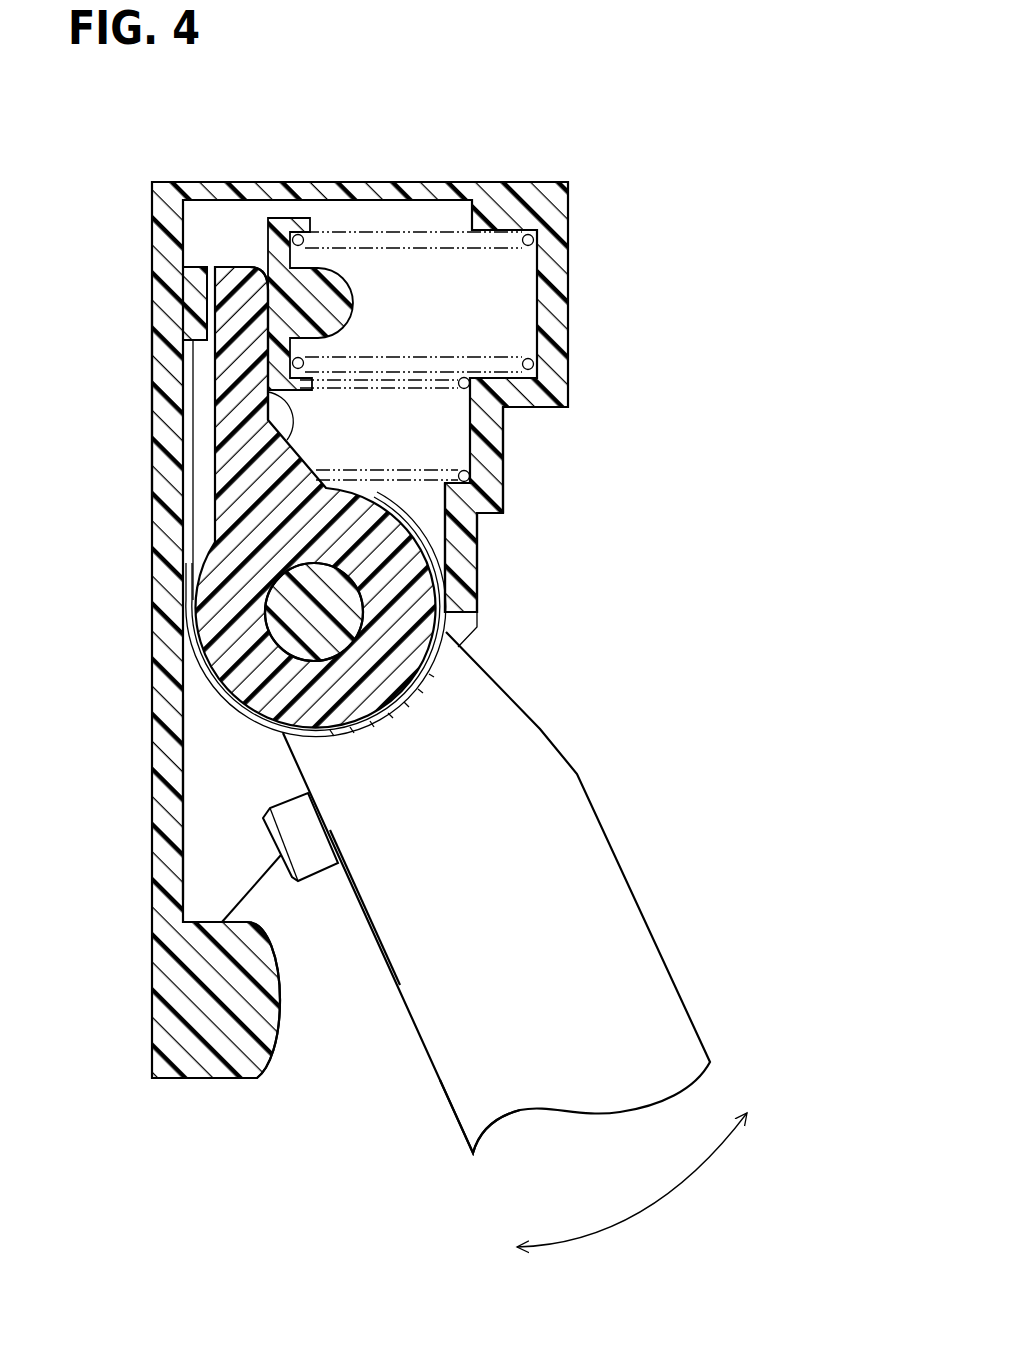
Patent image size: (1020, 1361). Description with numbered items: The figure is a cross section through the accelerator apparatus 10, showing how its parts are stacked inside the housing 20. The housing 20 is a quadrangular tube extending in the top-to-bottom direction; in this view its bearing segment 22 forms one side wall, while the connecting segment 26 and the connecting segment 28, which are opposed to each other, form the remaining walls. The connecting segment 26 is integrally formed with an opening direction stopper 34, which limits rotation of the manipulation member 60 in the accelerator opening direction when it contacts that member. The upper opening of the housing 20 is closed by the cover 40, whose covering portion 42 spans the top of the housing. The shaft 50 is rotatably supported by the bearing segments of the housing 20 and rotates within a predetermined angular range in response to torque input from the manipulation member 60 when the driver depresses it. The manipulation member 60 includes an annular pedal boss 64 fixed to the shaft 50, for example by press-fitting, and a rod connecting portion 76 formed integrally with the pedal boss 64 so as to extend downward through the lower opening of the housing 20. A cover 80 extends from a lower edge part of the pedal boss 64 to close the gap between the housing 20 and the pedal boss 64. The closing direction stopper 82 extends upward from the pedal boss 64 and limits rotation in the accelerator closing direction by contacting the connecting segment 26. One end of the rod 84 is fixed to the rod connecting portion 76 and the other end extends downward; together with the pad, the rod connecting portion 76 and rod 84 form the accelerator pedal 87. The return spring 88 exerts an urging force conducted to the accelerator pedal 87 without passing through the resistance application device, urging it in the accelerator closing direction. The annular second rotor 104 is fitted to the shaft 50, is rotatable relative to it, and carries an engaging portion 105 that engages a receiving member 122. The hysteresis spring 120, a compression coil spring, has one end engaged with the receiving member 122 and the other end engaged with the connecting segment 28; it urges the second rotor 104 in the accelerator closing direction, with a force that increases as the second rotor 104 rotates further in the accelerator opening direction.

The accelerator apparatus 10 is at (128, 128).
The housing 20 is at (150, 866).
The bearing segment 22 is at (200, 786).
The connecting segment 26 is at (160, 403).
The connecting segment 28 is at (487, 438).
The opening direction stopper 34 is at (217, 1063).
The cover 40 is at (368, 180).
The covering portion 42 is at (458, 190).
The shaft 50 is at (345, 620).
The manipulation member 60 is at (598, 813).
The pedal boss 64 is at (452, 520).
The rod connecting portion 76 is at (430, 998).
The cover 80 is at (237, 713).
The closing direction stopper 82 is at (228, 275).
The rod 84 is at (311, 856).
The accelerator pedal 87 is at (457, 1133).
The return spring 88 is at (440, 458).
The second rotor 104 is at (220, 575).
The engaging portion 105 is at (235, 430).
The hysteresis spring 120 is at (478, 248).
The receiving member 122 is at (268, 245).